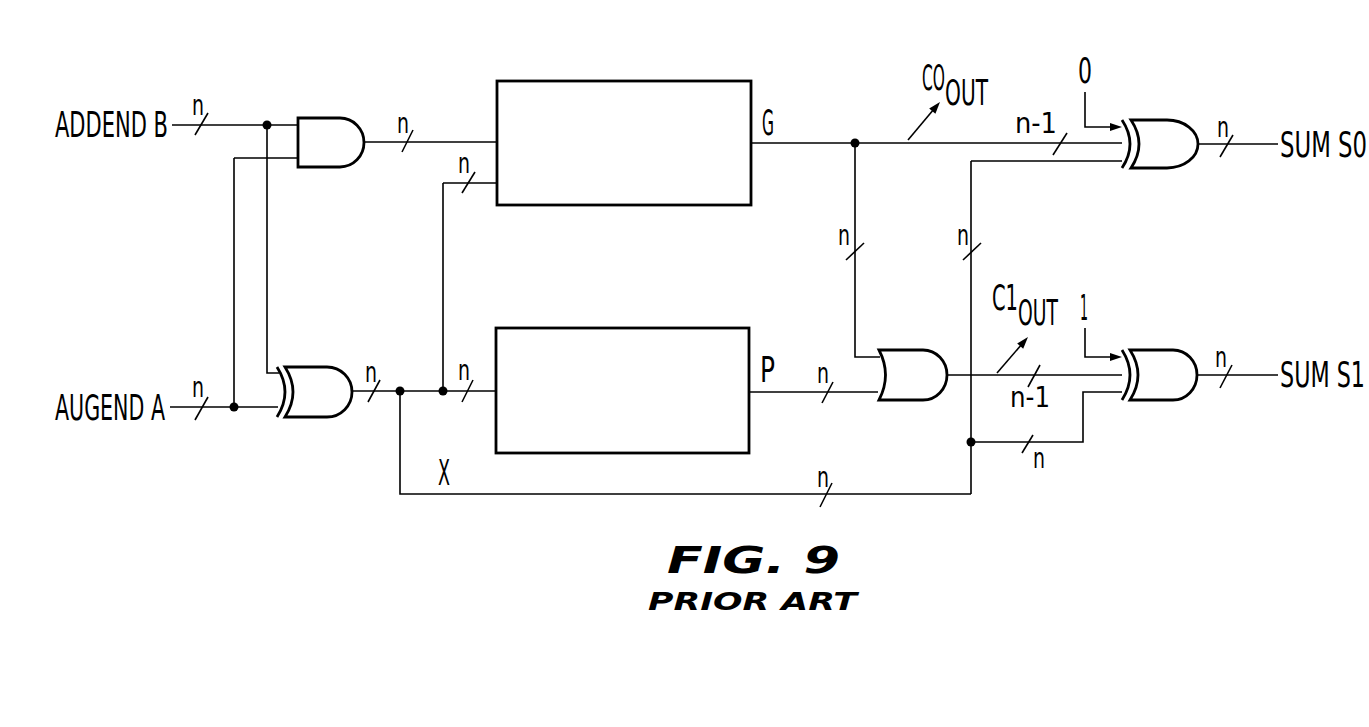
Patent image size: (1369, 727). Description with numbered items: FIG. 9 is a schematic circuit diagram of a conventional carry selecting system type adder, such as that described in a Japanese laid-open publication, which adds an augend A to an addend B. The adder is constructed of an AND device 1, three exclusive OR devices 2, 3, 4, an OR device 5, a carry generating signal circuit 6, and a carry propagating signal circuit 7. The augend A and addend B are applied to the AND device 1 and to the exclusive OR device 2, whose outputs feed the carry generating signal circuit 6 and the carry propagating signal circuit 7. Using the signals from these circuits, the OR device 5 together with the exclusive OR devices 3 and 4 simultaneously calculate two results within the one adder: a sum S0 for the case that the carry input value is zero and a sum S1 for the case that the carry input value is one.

The AND device 1 is at (333, 123).
The exclusive OR device 2 is at (308, 368).
The exclusive OR device 3 is at (1167, 125).
The exclusive OR device 4 is at (1158, 357).
The OR device 5 is at (908, 350).
The carry generating signal circuit 6 is at (648, 85).
The carry propagating signal circuit 7 is at (653, 332).